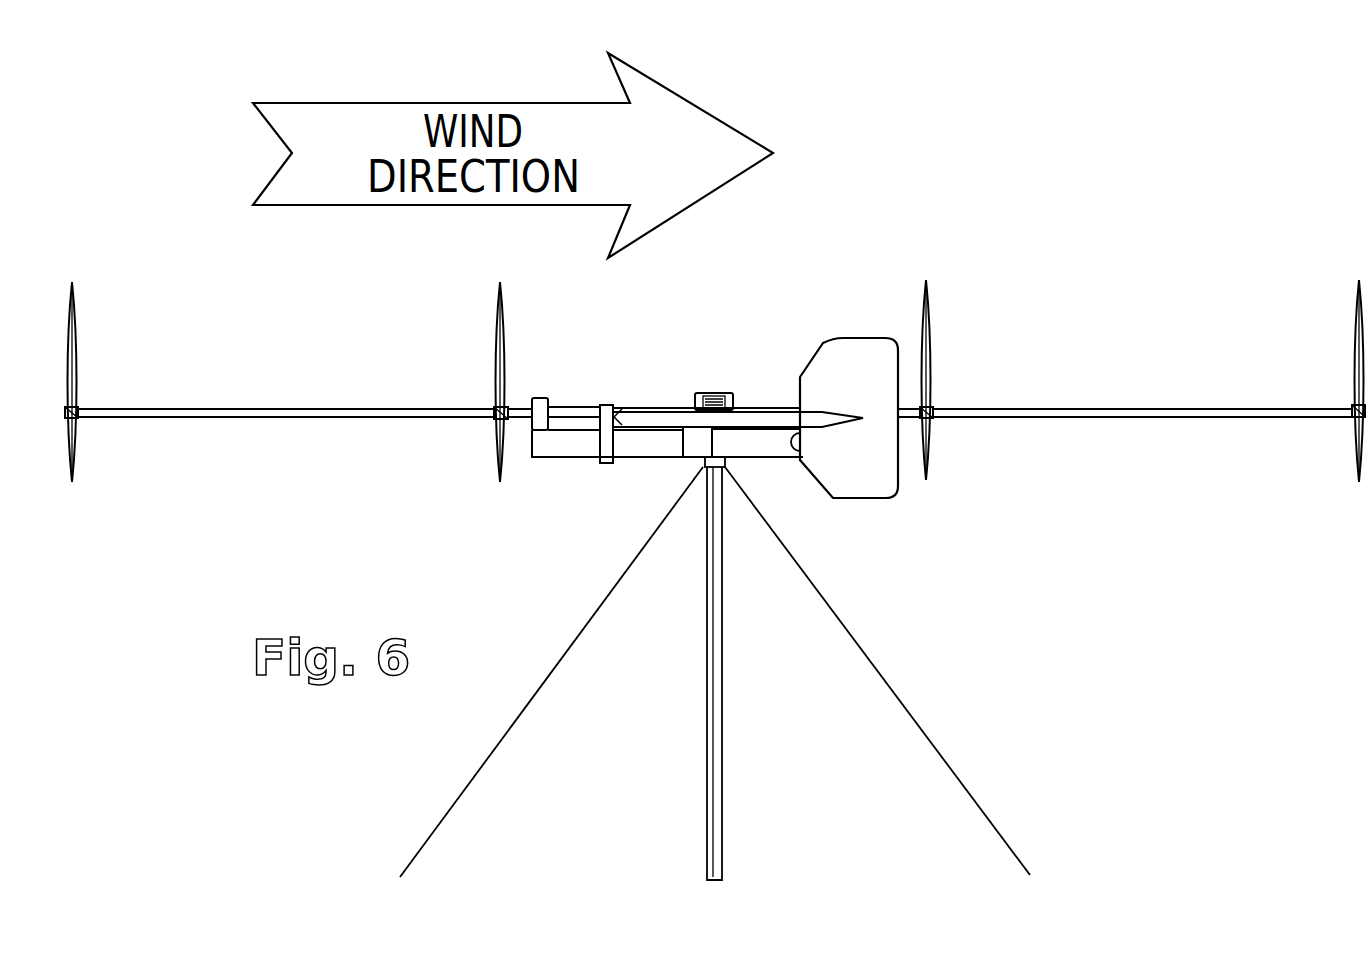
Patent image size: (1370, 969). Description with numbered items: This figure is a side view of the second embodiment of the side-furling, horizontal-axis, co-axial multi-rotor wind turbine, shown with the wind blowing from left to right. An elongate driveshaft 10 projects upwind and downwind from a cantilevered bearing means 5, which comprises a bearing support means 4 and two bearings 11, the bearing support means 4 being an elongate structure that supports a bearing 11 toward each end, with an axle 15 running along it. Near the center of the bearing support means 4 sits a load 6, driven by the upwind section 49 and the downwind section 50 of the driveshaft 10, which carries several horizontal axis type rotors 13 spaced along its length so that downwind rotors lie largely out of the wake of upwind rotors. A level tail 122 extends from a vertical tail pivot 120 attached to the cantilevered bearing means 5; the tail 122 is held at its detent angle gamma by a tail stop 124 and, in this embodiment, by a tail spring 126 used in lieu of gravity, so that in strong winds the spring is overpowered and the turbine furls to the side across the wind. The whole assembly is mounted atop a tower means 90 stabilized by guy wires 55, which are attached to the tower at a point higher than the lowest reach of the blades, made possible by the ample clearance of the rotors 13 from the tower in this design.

The bearing support means 4 is at (562, 458).
The cantilevered bearing means 5 is at (632, 362).
The load 6 is at (718, 392).
The elongate driveshaft 10 is at (345, 462).
The bearing 11 is at (538, 398).
The horizontal axis type rotor 13 is at (78, 459).
The axle 15 is at (572, 405).
The upwind section of the driveshaft 49 is at (205, 418).
The downwind section of the driveshaft 50 is at (1215, 417).
The guy wires 55 is at (465, 785).
The tower means 90 is at (725, 817).
The tail pivot 120 is at (603, 463).
The tail 122 is at (868, 498).
The tail stop 124 is at (693, 448).
The tail spring 126 is at (796, 438).